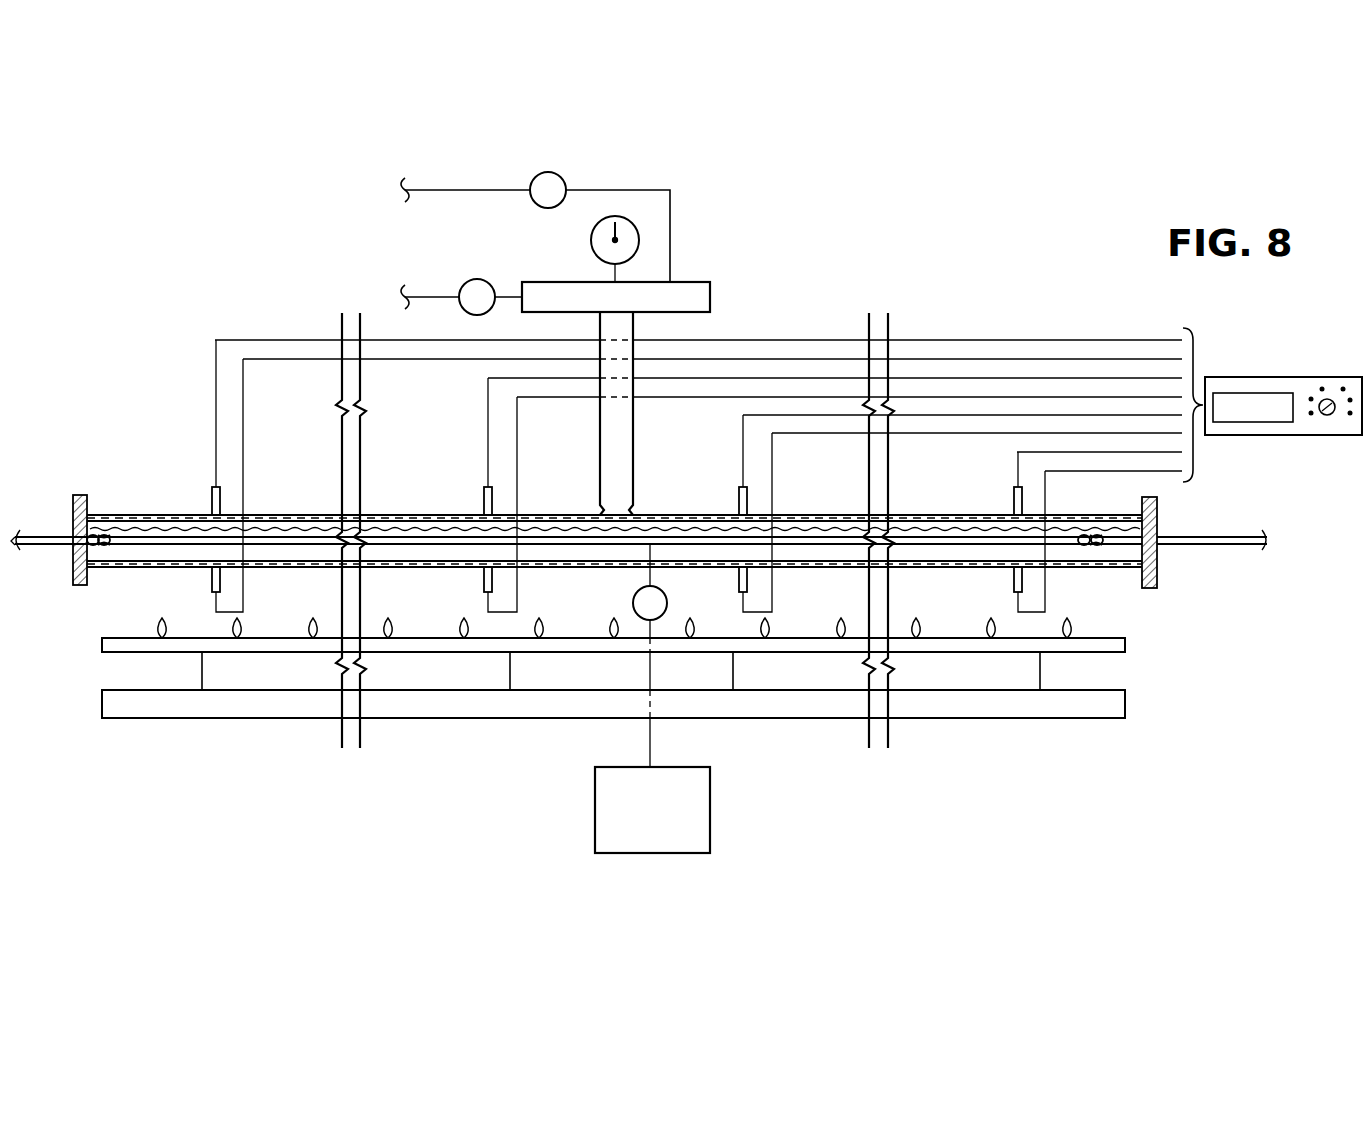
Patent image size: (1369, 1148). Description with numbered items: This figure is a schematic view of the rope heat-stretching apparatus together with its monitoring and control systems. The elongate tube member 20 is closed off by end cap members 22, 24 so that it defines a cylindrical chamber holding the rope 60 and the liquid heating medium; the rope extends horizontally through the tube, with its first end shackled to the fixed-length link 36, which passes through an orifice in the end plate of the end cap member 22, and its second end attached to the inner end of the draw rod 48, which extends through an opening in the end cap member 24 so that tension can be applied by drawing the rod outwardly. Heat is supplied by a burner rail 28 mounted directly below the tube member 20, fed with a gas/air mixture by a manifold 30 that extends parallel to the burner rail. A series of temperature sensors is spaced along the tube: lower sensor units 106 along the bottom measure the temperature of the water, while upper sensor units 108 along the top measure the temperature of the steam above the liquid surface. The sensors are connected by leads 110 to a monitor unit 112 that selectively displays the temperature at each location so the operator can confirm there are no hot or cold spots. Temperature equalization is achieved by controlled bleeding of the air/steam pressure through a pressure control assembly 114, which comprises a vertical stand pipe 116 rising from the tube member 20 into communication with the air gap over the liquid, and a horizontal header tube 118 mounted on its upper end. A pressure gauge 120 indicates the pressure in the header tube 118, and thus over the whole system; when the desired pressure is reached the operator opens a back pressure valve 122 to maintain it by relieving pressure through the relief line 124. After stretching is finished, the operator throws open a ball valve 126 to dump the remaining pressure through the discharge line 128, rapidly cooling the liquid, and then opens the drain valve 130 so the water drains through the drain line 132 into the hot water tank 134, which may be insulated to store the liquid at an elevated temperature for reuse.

The tube member 20 is at (432, 515).
The end cap member 22 is at (70, 490).
The end cap member 24 is at (1170, 506).
The burner rail 28 is at (1100, 648).
The manifold 30 is at (930, 705).
The fixed-length link 36 is at (44, 537).
The draw rod 48 is at (1240, 540).
The rope 60 is at (403, 542).
The lower sensor units 106 is at (212, 578).
The upper sensor units 108 is at (212, 500).
The leads 110 is at (1004, 433).
The monitor unit 112 is at (1283, 380).
The pressure control assembly 114 is at (562, 343).
The stem tube 116 is at (622, 445).
The header tube 118 is at (697, 285).
The pressure gauge 120 is at (591, 240).
The back pressure valve 122 is at (477, 280).
The relief line 124 is at (418, 292).
The ball valve 126 is at (530, 197).
The discharge line 128 is at (420, 197).
The drain valve 130 is at (633, 603).
The drain line 132 is at (651, 735).
The hot water tank 134 is at (652, 810).